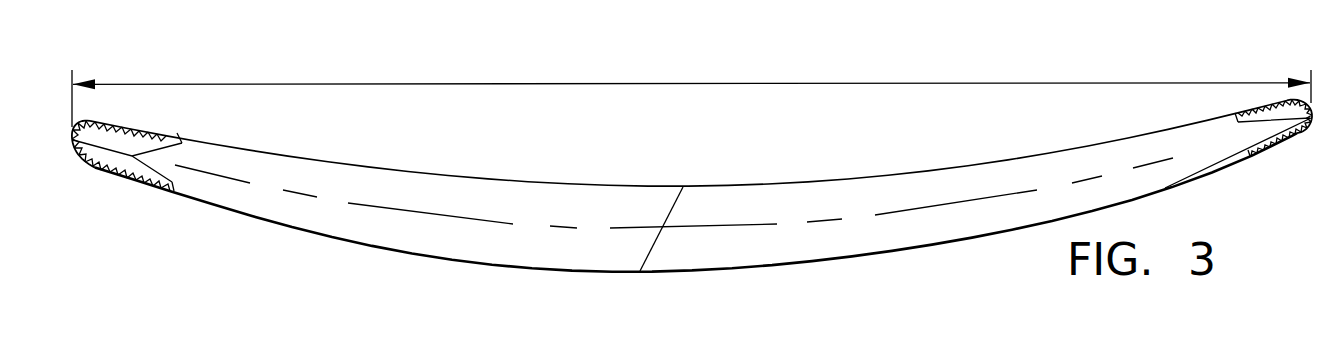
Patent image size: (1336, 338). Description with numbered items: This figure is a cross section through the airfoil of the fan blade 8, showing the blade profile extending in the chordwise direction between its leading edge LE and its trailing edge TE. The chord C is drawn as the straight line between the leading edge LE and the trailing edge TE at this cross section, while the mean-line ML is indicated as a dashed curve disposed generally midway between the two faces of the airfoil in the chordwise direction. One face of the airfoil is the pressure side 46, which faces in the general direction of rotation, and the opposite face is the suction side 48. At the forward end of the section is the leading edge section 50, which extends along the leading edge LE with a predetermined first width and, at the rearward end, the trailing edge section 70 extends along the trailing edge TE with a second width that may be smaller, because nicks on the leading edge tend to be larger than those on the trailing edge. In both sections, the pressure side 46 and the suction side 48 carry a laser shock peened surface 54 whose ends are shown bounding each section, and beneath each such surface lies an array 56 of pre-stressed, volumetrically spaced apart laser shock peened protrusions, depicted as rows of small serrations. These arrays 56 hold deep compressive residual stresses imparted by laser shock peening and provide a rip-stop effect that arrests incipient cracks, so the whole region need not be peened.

The fan blade 8 is at (760, 172).
The pressure side 46 is at (483, 178).
The suction side 48 is at (383, 249).
The leading edge section 50 is at (74, 143).
The laser shock peened surface 54 is at (181, 136).
The array of pre-stressed volumetrically spaced apart laser shock peened protrusions 56 is at (113, 122).
The trailing edge section 70 is at (1273, 151).
The mean-line ML is at (628, 228).
The chord C is at (375, 84).
The leading edge LE is at (72, 137).
The trailing edge TE is at (1312, 113).